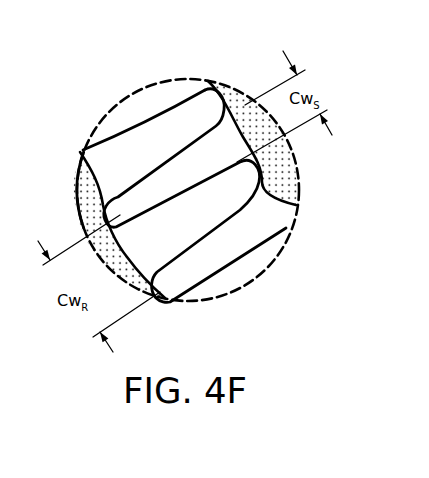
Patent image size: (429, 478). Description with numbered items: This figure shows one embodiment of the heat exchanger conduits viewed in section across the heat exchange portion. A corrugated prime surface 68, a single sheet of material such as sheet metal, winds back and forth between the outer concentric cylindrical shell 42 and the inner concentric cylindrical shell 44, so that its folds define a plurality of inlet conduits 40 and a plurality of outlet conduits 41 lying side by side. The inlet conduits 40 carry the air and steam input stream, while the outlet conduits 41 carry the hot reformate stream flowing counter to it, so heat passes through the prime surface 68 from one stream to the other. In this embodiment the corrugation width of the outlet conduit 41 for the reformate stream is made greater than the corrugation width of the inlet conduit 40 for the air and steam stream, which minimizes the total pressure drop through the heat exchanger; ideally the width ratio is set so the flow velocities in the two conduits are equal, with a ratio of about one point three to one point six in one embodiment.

The inlet conduits 40 is at (192, 172).
The outlet conduits 41 is at (160, 302).
The outer concentric cylindrical shell 42 is at (100, 193).
The inner concentric cylindrical shell 44 is at (212, 87).
The prime surface 68 is at (158, 110).